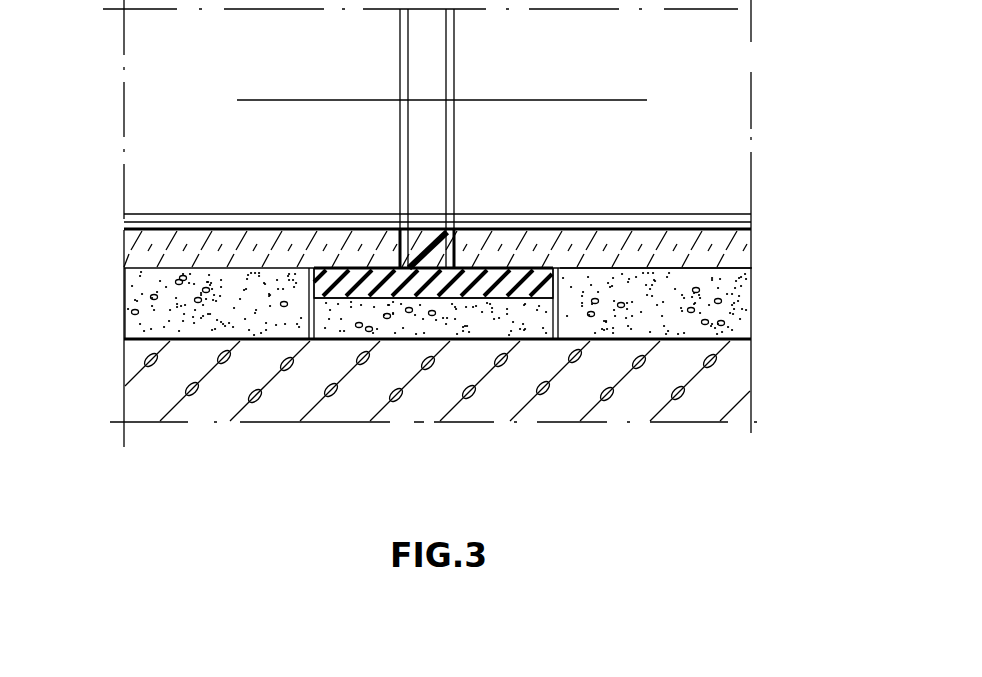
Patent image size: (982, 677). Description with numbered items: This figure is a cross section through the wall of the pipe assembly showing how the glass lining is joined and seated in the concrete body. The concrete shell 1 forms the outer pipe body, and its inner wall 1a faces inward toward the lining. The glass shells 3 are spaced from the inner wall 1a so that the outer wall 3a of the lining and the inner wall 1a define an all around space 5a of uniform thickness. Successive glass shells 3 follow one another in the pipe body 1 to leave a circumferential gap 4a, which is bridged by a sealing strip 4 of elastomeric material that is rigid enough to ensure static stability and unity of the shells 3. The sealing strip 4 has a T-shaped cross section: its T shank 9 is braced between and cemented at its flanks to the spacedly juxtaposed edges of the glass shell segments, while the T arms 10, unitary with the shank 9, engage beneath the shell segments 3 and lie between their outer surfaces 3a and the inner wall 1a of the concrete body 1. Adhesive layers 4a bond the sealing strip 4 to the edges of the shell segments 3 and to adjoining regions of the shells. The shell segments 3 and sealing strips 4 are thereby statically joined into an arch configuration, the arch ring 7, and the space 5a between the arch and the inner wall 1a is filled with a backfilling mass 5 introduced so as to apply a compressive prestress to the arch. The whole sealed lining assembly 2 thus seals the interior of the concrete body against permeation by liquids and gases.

The concrete shell 1 is at (720, 380).
The inner wall of the concrete body 1a is at (698, 333).
The floor structure 2 is at (700, 202).
The glass shell 3 is at (157, 245).
The outer wall of the lining 3a is at (655, 268).
The sealing strip 4 is at (395, 299).
The circumferential gap 4a is at (395, 265).
The backfilling mass 5 is at (710, 299).
The all around space 5a is at (132, 311).
The arch ring 7 is at (725, 53).
The T shank 9 is at (430, 238).
The T arms 10 is at (532, 275).